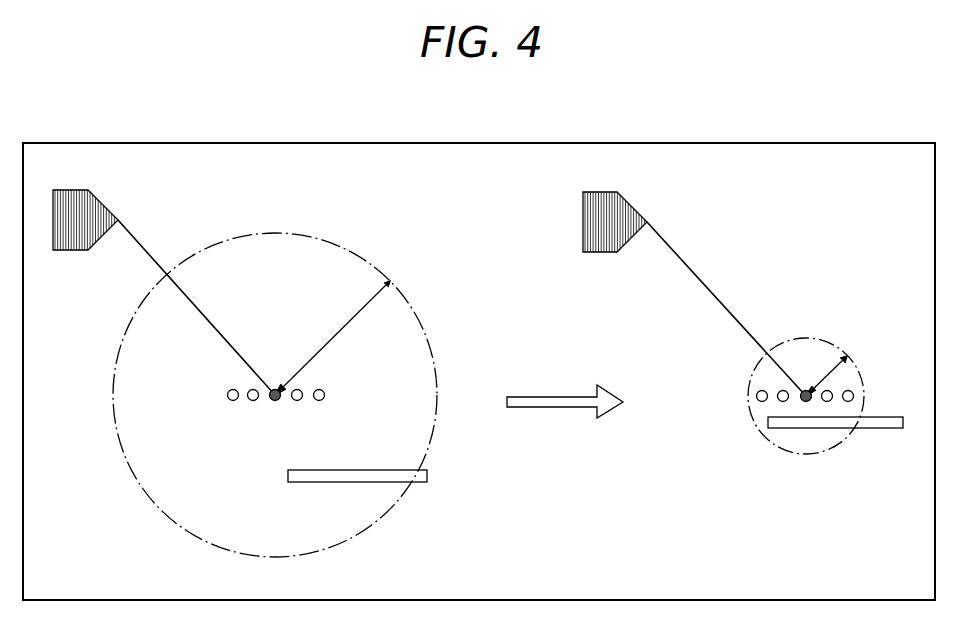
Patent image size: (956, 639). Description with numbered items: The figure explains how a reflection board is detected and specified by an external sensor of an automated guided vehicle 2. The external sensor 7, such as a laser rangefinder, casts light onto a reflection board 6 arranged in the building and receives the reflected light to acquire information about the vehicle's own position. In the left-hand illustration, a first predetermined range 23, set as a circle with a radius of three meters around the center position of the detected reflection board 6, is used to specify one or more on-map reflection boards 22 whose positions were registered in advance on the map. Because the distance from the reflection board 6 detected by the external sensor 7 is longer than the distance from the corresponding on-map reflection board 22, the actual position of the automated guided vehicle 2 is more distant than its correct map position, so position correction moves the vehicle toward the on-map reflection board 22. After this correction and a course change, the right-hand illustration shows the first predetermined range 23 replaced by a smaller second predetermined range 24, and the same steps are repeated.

The automated guided vehicle 2 is at (72, 250).
The reflection board 6 is at (233, 401).
The external sensor 7 is at (116, 221).
The on-map reflection board 22 is at (357, 482).
The first predetermined range 23 is at (333, 342).
The second predetermined range 24 is at (825, 375).